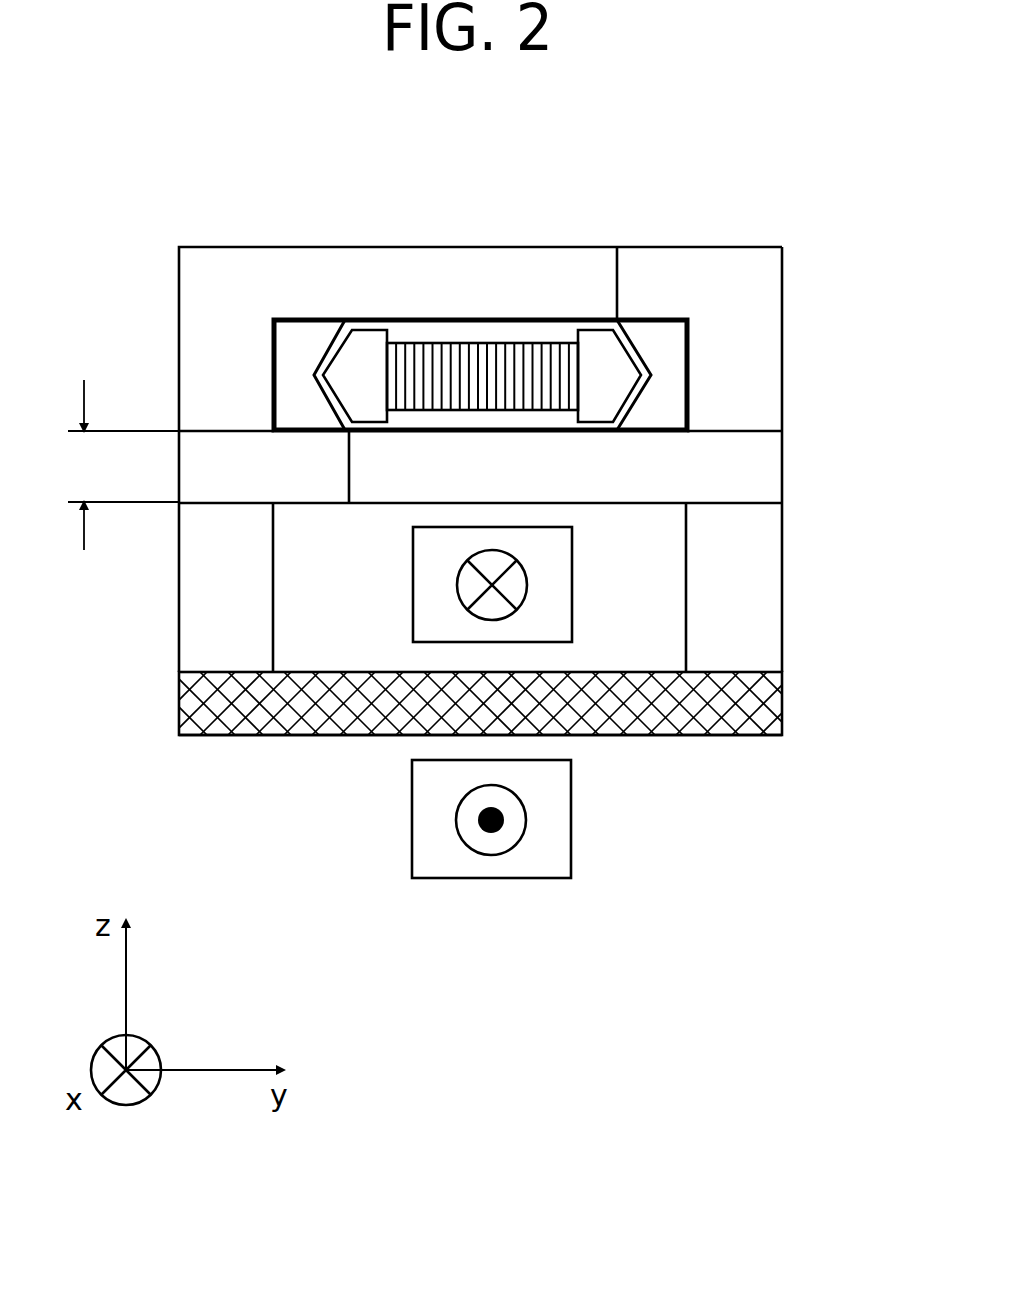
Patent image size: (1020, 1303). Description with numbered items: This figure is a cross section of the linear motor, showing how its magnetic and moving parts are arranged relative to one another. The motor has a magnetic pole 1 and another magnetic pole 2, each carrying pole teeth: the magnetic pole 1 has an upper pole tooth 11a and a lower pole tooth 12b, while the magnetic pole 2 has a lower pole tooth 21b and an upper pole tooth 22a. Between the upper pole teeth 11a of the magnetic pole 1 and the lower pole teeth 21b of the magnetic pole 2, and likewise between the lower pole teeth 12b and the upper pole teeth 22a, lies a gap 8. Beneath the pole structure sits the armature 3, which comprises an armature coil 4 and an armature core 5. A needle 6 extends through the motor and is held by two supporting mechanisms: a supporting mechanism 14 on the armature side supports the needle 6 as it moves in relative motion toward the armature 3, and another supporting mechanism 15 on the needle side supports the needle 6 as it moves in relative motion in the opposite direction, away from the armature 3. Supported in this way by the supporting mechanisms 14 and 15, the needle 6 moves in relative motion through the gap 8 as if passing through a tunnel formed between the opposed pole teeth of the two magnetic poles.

The magnetic pole 1 is at (197, 615).
The magnetic pole 2 is at (750, 575).
The armature 3 is at (782, 703).
The armature coil 4 is at (560, 812).
The armature core 5 is at (188, 700).
The needle 6 is at (532, 347).
The gap 8 is at (123, 465).
The upper pole tooth 11a is at (458, 268).
The lower pole tooth 12b is at (223, 445).
The supporting mechanism 14 is at (297, 345).
The supporting mechanism 15 is at (370, 345).
The lower pole tooth 21b is at (757, 475).
The upper pole tooth 22a is at (733, 285).